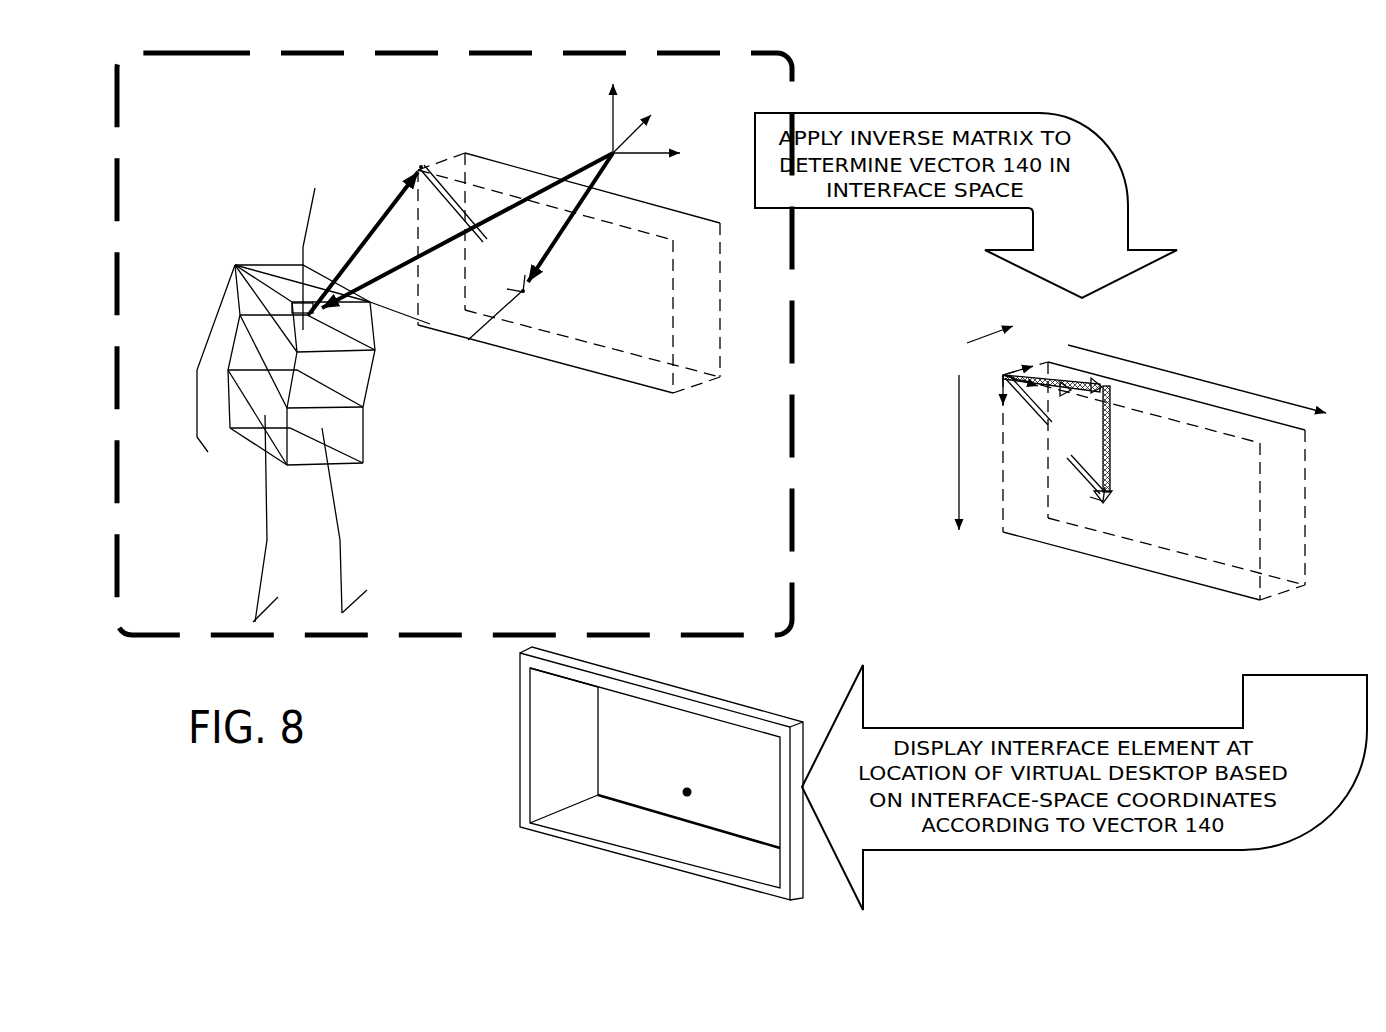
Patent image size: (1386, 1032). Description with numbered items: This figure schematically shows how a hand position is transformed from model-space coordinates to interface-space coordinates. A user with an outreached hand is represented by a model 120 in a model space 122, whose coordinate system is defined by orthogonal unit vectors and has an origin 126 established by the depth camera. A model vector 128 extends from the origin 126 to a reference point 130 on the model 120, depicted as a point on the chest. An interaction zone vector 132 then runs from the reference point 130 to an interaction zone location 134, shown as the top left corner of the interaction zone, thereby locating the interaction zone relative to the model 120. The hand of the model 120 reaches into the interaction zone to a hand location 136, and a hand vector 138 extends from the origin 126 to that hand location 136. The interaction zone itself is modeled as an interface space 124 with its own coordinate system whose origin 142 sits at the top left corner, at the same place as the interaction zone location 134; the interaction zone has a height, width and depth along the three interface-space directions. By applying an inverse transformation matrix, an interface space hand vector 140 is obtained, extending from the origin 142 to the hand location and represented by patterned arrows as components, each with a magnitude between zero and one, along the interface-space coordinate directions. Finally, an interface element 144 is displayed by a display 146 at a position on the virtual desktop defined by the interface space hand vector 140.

The model 120 is at (343, 560).
The model space 122 is at (454, 344).
The interface space 124 is at (517, 358).
The origin of model-space coordinate system 126 is at (600, 147).
The model vector 128 is at (500, 218).
The reference point 130 is at (309, 327).
The interaction zone vector 132 is at (367, 237).
The interaction zone location 134 is at (413, 161).
The hand location 136 is at (536, 305).
The hand vector 138 is at (547, 265).
The interface space hand vector 140 is at (521, 290).
The origin of interface-space coordinate system 142 is at (998, 370).
The interface element 144 is at (674, 789).
The display 146 is at (562, 834).